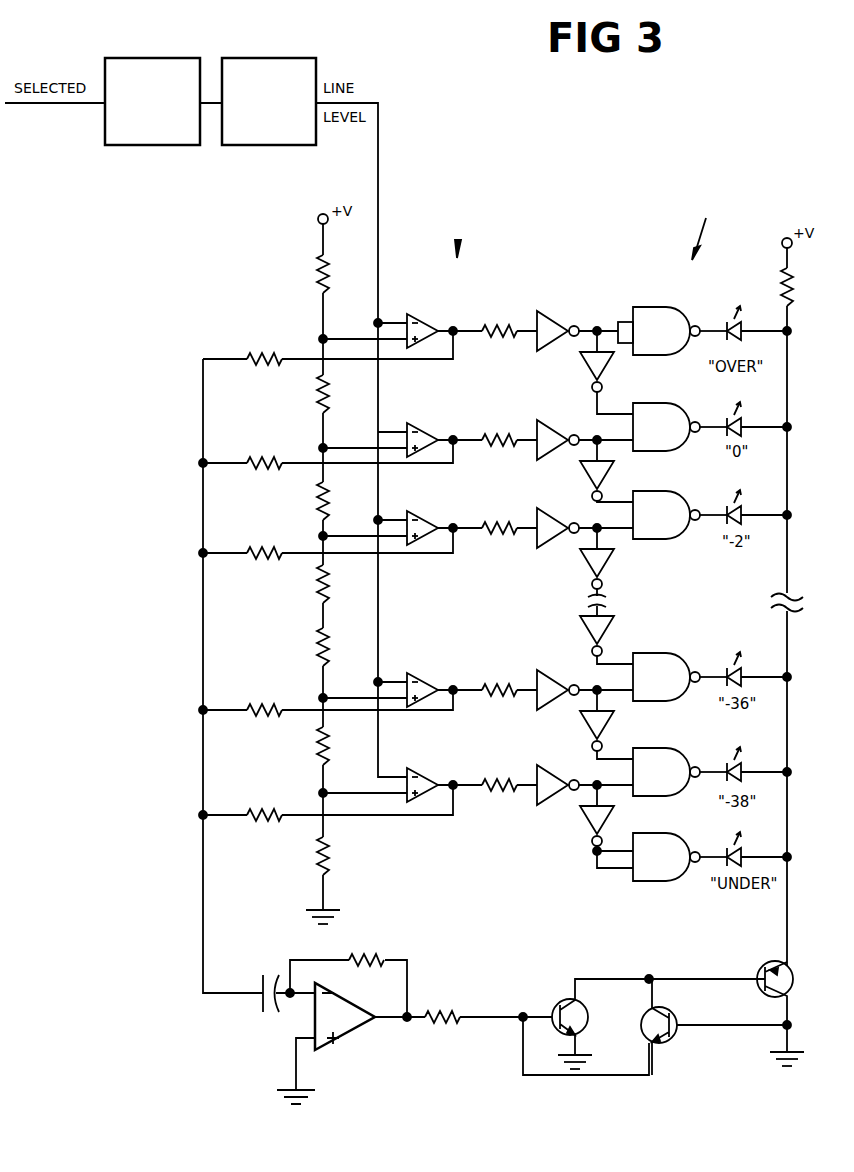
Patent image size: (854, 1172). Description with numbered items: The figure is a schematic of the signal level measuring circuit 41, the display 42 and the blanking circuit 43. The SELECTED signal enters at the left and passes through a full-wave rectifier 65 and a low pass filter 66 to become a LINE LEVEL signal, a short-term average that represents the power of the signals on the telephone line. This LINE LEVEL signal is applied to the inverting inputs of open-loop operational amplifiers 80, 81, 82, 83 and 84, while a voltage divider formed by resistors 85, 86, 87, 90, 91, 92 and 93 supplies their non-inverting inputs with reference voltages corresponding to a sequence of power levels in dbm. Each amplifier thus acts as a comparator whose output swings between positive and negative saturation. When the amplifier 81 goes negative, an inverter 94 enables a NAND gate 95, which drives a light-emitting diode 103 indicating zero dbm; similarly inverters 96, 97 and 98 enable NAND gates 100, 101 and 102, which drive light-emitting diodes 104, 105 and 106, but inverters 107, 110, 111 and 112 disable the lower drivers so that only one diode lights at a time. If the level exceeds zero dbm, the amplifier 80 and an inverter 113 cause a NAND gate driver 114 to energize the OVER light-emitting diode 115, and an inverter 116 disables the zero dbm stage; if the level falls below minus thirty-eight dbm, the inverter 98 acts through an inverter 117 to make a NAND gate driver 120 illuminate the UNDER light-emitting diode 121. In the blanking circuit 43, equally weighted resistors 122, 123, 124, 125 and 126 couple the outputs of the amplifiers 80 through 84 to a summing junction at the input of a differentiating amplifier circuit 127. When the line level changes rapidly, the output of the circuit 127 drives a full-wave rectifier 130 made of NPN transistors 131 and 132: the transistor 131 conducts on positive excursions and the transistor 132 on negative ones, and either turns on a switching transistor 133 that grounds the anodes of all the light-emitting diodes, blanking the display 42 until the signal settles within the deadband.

The signal level measuring circuit 41 is at (483, 213).
The display 42 is at (717, 228).
The blanking circuit 43 is at (502, 1142).
The full-wave rectifier 65 is at (146, 153).
The low pass filter 66 is at (276, 153).
The operational amplifier 80 is at (411, 314).
The operational amplifier 81 is at (411, 423).
The operational amplifier 82 is at (411, 513).
The operational amplifier 83 is at (411, 673).
The operational amplifier 84 is at (411, 768).
The resistor 85 is at (330, 274).
The resistor 86 is at (330, 394).
The resistor 87 is at (330, 499).
The resistor 90 is at (330, 584).
The resistor 91 is at (330, 649).
The resistor 92 is at (330, 749).
The resistor 93 is at (330, 859).
The inverter 94 is at (545, 430).
The NAND gate 95 is at (658, 404).
The inverter 96 is at (544, 500).
The inverter 97 is at (544, 658).
The inverter 98 is at (544, 754).
The NAND gate 100 is at (658, 495).
The NAND gate 101 is at (658, 654).
The NAND gate 102 is at (658, 749).
The light-emitting diode 103 is at (726, 419).
The light-emitting diode 104 is at (726, 509).
The light-emitting diode 105 is at (726, 666).
The light-emitting diode 106 is at (726, 764).
The inverter 107 is at (588, 482).
The inverter 110 is at (588, 557).
The inverter 111 is at (586, 632).
The inverter 112 is at (588, 717).
The inverter 113 is at (558, 316).
The NAND gate driver 114 is at (655, 306).
The light-emitting diode 115 is at (726, 321).
The inverter 116 is at (588, 378).
The inverter 117 is at (588, 812).
The NAND gate driver 120 is at (647, 878).
The light-emitting diode 121 is at (726, 849).
The resistor 122 is at (250, 344).
The resistor 123 is at (250, 449).
The resistor 124 is at (250, 539).
The resistor 125 is at (250, 699).
The resistor 126 is at (250, 804).
The differentiating amplifier circuit 127 is at (358, 950).
The full-wave rectifier 130 is at (612, 962).
The NPN transistor 131 is at (586, 1004).
The NPN transistor 132 is at (669, 1004).
The switching transistor 133 is at (791, 967).